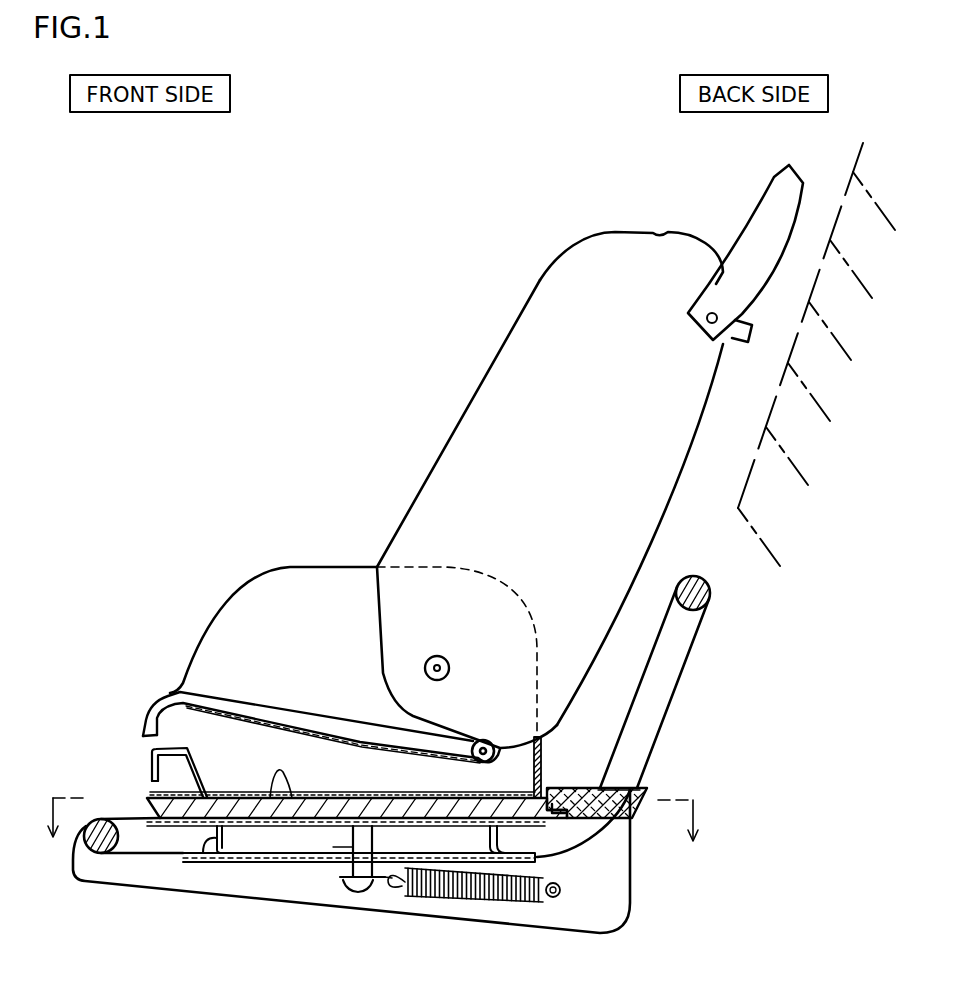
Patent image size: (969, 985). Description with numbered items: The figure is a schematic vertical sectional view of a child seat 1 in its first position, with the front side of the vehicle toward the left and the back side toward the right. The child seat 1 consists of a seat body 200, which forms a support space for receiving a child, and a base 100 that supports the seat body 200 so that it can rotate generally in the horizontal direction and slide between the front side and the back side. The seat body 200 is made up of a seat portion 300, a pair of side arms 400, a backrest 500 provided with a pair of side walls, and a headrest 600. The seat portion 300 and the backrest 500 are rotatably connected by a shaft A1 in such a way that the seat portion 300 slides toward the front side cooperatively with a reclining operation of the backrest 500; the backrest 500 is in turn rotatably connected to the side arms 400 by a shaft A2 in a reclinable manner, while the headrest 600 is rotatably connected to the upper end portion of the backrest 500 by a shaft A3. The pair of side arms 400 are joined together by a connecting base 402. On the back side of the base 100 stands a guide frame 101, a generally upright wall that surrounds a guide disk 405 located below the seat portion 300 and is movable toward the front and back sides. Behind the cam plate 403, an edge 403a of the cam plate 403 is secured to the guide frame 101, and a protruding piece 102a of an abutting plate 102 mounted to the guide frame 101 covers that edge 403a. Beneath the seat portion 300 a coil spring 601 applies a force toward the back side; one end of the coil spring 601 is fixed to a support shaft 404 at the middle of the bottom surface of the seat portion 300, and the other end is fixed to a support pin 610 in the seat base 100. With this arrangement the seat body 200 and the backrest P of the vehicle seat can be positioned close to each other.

The child seat 1 is at (243, 238).
The base 100 is at (102, 873).
The guide frame 101 is at (688, 632).
The abutting plate 102 is at (637, 790).
The protruding piece 102a is at (613, 790).
The seat body 200 is at (368, 444).
The seat portion 300 is at (235, 705).
The side arms 400 is at (290, 585).
The backrest 500 is at (405, 500).
The headrest 600 is at (780, 197).
The coil spring 601 is at (453, 897).
The support pin 610 is at (553, 897).
The connecting base 402 is at (272, 800).
The cam plate 403 is at (185, 808).
The edge 403a is at (563, 813).
The support shaft 404 is at (353, 836).
The guide disk 405 is at (225, 806).
The shaft A1 is at (560, 790).
The shaft A2 is at (433, 660).
The shaft A3 is at (706, 313).
The backrest of the vehicle seat P is at (777, 397).